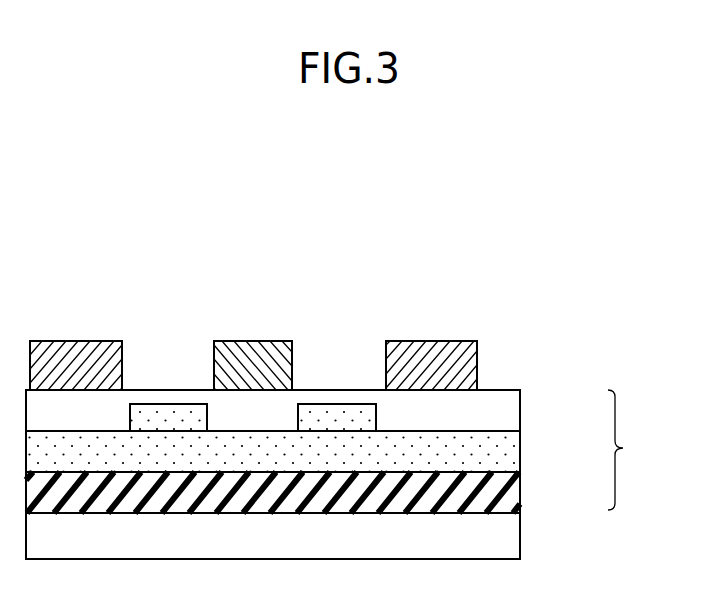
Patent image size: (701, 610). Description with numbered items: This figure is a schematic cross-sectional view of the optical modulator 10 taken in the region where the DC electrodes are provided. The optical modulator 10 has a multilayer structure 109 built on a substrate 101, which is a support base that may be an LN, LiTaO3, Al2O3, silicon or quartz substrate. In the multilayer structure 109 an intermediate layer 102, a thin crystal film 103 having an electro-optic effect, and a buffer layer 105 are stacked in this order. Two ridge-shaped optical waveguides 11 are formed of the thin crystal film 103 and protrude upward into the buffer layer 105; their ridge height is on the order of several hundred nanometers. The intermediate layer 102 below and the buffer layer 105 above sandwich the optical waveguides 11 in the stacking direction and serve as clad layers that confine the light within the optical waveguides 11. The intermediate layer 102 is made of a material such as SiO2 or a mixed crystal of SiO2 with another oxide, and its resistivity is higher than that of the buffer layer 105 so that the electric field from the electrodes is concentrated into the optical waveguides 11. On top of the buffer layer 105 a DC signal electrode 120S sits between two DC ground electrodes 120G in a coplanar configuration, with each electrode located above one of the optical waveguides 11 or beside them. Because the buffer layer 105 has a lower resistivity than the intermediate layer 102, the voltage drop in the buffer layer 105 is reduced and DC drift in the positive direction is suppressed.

The optical modulator 10 is at (614, 246).
The optical waveguide 11 is at (165, 413).
The substrate 101 is at (505, 533).
The intermediate layer 102 is at (505, 493).
The thin crystal film 103 is at (505, 451).
The buffer layer 105 is at (505, 411).
The multilayer structure 109 is at (639, 450).
The DC ground electrode 120G is at (77, 355).
The DC signal electrode 120S is at (254, 355).